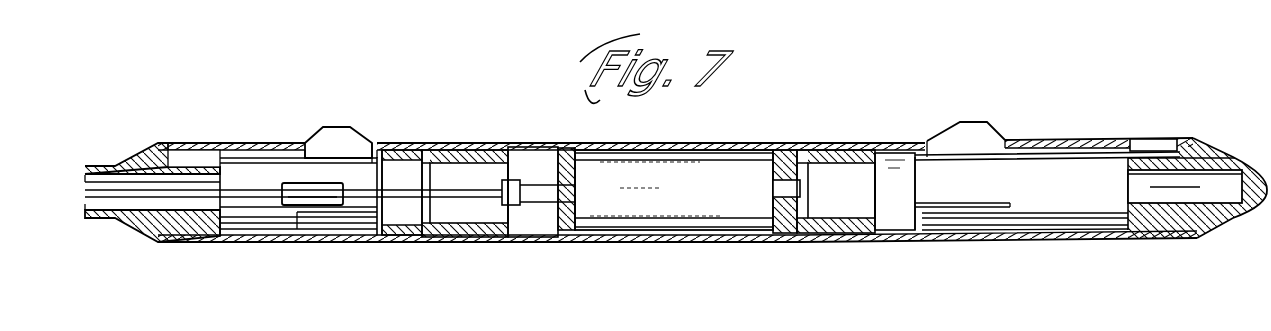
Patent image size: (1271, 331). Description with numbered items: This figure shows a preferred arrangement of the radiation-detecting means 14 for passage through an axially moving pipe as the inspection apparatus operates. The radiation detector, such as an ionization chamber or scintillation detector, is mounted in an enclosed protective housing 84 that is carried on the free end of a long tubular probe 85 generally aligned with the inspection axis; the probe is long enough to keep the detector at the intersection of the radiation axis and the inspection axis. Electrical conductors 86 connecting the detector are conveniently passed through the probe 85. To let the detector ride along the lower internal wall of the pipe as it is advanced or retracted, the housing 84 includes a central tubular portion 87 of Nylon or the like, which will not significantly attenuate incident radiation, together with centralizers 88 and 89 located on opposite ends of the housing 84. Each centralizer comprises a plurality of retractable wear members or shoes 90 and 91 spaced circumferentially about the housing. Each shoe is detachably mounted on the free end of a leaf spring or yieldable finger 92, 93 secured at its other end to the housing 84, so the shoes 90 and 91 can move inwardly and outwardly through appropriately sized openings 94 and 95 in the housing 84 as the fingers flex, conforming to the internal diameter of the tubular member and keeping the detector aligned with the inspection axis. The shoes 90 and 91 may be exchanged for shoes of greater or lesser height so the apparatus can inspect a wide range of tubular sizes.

The radiation-detecting means 14 is at (784, 121).
The protective housing 84 is at (406, 244).
The tubular probe 85 is at (106, 219).
The electrical conductors 86 is at (186, 197).
The central tubular portion 87 is at (712, 142).
The centralizer 88 is at (361, 114).
The centralizer 89 is at (988, 114).
The wear shoe 90 is at (376, 135).
The wear shoe 91 is at (990, 140).
The leaf spring 92 is at (250, 158).
The leaf spring 93 is at (1085, 152).
The opening 94 is at (306, 144).
The opening 95 is at (856, 163).